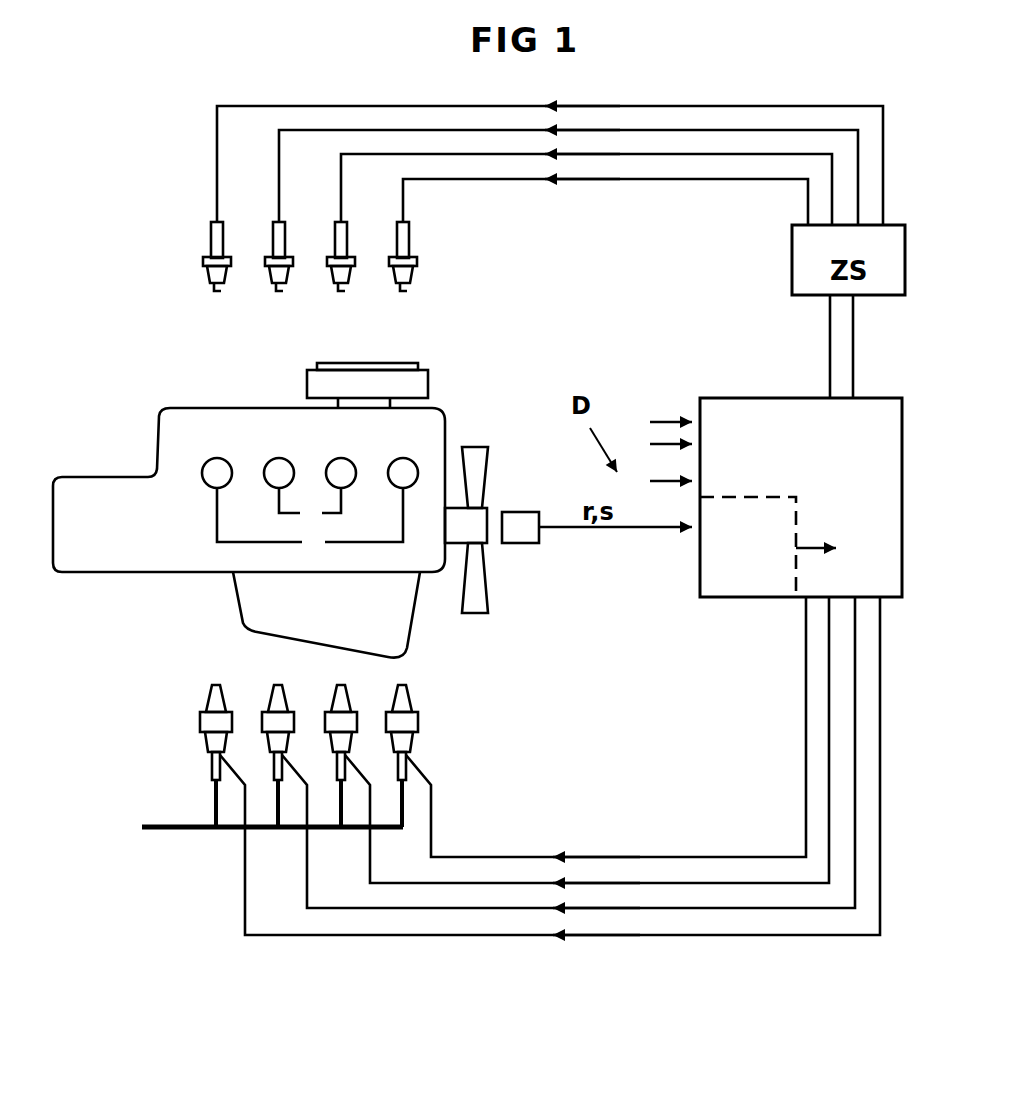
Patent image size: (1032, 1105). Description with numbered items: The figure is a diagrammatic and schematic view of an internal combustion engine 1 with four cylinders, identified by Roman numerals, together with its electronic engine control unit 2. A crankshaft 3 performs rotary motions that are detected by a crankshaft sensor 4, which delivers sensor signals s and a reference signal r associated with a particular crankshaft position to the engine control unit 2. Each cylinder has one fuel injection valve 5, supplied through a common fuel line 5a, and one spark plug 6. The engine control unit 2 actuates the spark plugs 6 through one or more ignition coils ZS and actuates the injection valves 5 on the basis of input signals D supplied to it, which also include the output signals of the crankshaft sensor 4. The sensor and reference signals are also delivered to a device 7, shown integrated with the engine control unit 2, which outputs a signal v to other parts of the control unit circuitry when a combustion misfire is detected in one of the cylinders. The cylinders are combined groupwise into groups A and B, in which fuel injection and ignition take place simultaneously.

The internal combustion engine 1 is at (146, 467).
The electronic engine control unit 2 is at (801, 497).
The crankshaft 3 is at (482, 520).
The crankshaft sensor 4 is at (514, 534).
The fuel injection valve 5 is at (442, 722).
The fuel line 5a is at (174, 826).
The spark plug 6 is at (442, 264).
The device 7 is at (779, 547).